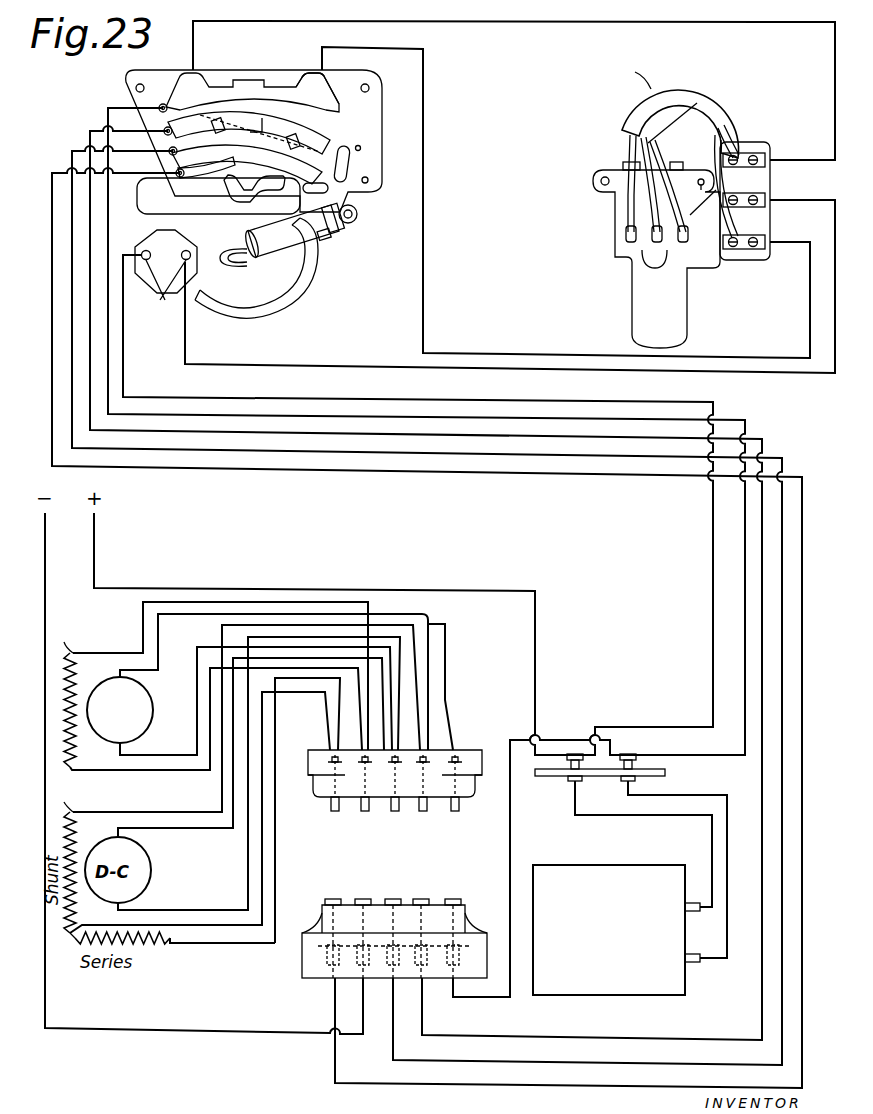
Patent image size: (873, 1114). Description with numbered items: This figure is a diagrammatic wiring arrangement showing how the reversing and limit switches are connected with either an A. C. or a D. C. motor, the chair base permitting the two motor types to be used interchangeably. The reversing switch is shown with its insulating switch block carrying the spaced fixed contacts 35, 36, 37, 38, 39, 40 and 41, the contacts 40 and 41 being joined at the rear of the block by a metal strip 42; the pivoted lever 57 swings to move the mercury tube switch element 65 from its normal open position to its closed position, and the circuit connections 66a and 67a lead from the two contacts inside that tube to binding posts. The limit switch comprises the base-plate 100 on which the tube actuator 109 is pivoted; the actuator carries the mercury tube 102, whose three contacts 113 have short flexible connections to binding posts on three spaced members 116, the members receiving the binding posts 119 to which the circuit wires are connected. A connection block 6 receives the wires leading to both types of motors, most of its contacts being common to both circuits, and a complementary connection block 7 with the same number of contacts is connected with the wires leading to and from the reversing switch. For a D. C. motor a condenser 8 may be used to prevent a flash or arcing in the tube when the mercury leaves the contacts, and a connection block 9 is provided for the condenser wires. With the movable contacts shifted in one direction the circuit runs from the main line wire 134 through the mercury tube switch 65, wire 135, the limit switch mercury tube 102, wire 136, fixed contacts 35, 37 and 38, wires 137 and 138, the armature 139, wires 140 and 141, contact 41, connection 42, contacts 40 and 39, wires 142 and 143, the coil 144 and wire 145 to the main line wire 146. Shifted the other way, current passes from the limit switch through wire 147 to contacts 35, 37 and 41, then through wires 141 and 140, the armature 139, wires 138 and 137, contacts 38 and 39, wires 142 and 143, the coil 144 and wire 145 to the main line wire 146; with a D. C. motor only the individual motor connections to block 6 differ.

The fixed contact 35 is at (200, 78).
The fixed contact 36 is at (272, 84).
The fixed contact 37 is at (335, 110).
The fixed contact 38 is at (215, 145).
The fixed contact 39 is at (222, 172).
The fixed contact 40 is at (292, 152).
The fixed contact 41 is at (190, 132).
The metal strip 42 is at (254, 186).
The lever 57 is at (150, 205).
The mercury tube switch element 65 is at (312, 238).
The circuit connection 66a is at (178, 279).
The circuit connection 67a is at (163, 296).
The base-plate 100 is at (614, 243).
The mercury tube 102 is at (610, 185).
The tube actuator 109 is at (612, 130).
The contact 113 is at (668, 252).
The spaced member 116 is at (745, 153).
The binding post 119 is at (768, 168).
The main line wire 134 is at (408, 393).
The wire 135 is at (400, 359).
The wire 136 is at (490, 114).
The wire 137 is at (82, 134).
The wire 138 is at (200, 639).
The armature 139 is at (108, 711).
The wire 140 is at (215, 590).
The wire 141 is at (97, 114).
The wire 142 is at (68, 157).
The wire 143 is at (183, 772).
The coil 144 is at (105, 639).
The wire 145 is at (345, 590).
The main line wire 146 is at (92, 577).
The wire 147 is at (560, 54).
The connection block 6 is at (395, 780).
The complementary connection block 7 is at (394, 938).
The condenser 8 is at (616, 930).
The connection block 9 is at (631, 856).